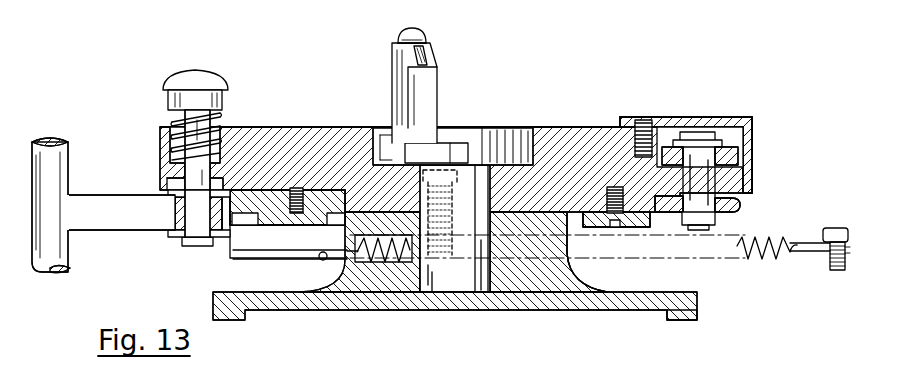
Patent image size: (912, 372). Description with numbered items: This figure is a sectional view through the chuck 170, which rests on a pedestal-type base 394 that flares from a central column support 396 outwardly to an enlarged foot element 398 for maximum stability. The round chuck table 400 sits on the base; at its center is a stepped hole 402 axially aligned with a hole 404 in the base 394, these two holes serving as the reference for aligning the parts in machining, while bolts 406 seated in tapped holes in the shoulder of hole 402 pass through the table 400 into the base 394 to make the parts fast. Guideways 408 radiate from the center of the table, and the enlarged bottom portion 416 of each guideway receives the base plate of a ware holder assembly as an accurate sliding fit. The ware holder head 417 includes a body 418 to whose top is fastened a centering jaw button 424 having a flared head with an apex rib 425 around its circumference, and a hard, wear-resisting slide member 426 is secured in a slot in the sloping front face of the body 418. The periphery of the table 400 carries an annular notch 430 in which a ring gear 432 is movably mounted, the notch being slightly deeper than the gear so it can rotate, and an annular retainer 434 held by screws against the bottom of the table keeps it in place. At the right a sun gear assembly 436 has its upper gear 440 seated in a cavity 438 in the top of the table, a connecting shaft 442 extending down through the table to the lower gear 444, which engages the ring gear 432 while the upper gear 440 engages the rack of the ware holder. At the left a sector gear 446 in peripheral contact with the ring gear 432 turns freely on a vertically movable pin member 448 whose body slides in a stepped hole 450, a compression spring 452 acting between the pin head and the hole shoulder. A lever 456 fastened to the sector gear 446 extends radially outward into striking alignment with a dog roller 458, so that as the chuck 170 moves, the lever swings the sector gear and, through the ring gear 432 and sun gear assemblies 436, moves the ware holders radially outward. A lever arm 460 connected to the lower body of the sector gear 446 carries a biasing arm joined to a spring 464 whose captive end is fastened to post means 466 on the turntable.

The chuck 170 is at (612, 57).
The pedestal-type base 394 is at (331, 322).
The central column support 396 is at (580, 277).
The enlarged foot element 398 is at (670, 321).
The chuck table 400 is at (589, 80).
The stepped hole 402 is at (504, 124).
The hole 404 is at (448, 320).
The bolts 406 is at (452, 255).
The guideways 408 is at (400, 152).
The enlarged bottom portion of guideway 416 is at (478, 146).
The ware holder head 417 is at (382, 82).
The body 418 is at (437, 84).
The centering jaw button 424 is at (426, 32).
The apex rib 425 is at (398, 33).
The slide member 426 is at (412, 52).
The annular notch 430 is at (628, 183).
The ring gear 432 is at (248, 216).
The annular retainer 434 is at (268, 228).
The sun gear assembly 436 is at (766, 150).
The cavity 438 is at (670, 134).
The upper gear 440 is at (732, 146).
The connecting shaft 442 is at (716, 181).
The lower gear 444 is at (742, 205).
The sector gear 446 is at (178, 208).
The pin member 448 is at (172, 73).
The stepped hole 450 is at (176, 137).
The compression spring 452 is at (178, 145).
The lever 456 is at (120, 228).
The dog roller 458 is at (75, 136).
The lever arm 460 is at (248, 262).
The spring 464 is at (756, 260).
The post means 466 is at (838, 227).